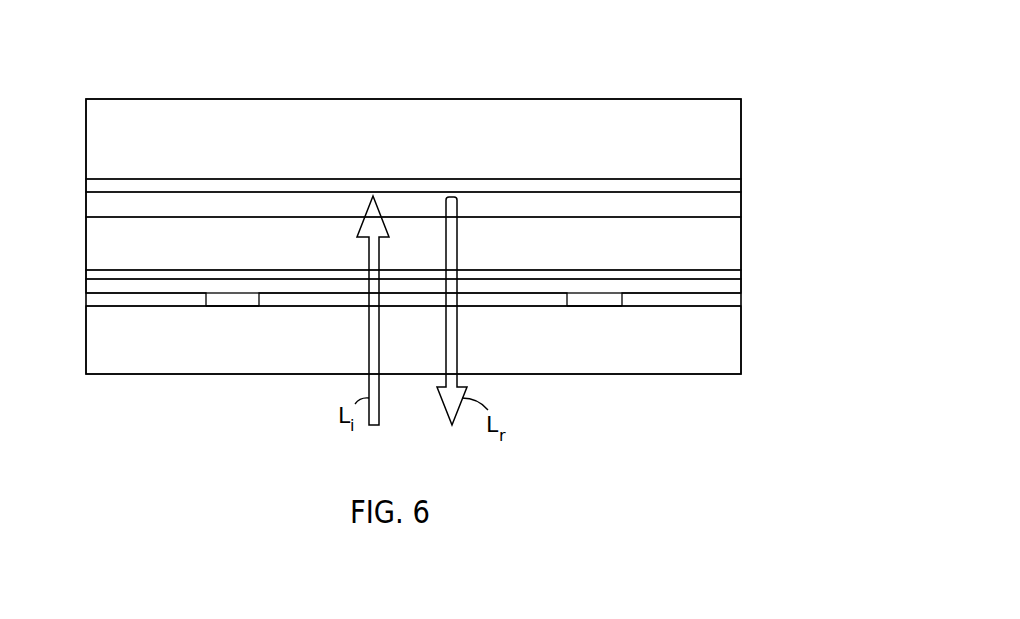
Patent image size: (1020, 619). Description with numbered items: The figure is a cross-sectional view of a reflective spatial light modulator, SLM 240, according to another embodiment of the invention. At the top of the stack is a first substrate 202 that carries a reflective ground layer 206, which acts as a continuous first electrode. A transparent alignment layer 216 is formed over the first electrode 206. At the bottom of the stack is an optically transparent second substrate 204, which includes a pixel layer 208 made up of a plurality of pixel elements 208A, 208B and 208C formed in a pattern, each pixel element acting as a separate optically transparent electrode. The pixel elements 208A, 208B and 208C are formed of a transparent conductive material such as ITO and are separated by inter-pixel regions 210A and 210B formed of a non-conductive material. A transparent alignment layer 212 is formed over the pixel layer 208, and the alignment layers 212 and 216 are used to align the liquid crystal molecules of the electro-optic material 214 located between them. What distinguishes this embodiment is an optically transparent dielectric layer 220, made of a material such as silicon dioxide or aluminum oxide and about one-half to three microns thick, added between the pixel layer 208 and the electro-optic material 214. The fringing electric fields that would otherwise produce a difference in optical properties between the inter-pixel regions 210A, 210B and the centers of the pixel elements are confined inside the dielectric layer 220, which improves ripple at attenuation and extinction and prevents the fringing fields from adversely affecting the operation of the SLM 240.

The SLM 240 is at (788, 47).
The first substrate 202 is at (741, 127).
The reflective ground layer 206 is at (741, 182).
The transparent alignment layer 216 is at (741, 205).
The electro-optic material 214 is at (79, 220).
The transparent alignment layer 212 is at (741, 275).
The dielectric layer 220 is at (83, 286).
The pixel layer 208 is at (452, 378).
The pixel element 208A is at (685, 307).
The pixel element 208B is at (420, 307).
The pixel element 208C is at (140, 307).
The inter-pixel region 210A is at (593, 307).
The inter-pixel region 210B is at (225, 308).
The second substrate 204 is at (741, 337).